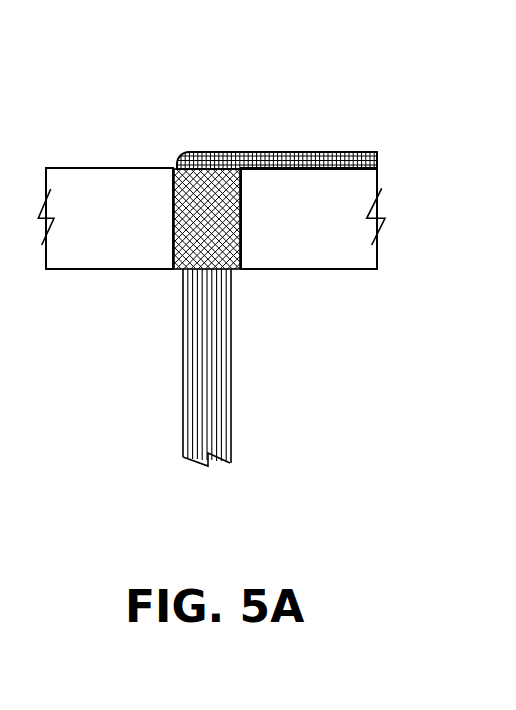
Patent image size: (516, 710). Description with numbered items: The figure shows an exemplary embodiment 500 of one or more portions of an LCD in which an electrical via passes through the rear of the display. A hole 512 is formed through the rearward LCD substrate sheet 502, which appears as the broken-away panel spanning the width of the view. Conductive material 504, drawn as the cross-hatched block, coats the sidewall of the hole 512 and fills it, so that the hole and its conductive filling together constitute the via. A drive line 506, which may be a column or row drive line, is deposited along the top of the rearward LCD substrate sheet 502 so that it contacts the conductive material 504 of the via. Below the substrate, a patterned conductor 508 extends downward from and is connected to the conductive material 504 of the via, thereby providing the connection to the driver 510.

The exemplary embodiment 500 is at (152, 55).
The rearward LCD substrate sheet 502 is at (130, 168).
The conductive material 504 is at (207, 220).
The drive line 506 is at (287, 152).
The patterned conductor 508 is at (216, 307).
The driver 510 is at (148, 498).
The hole 512 is at (173, 218).